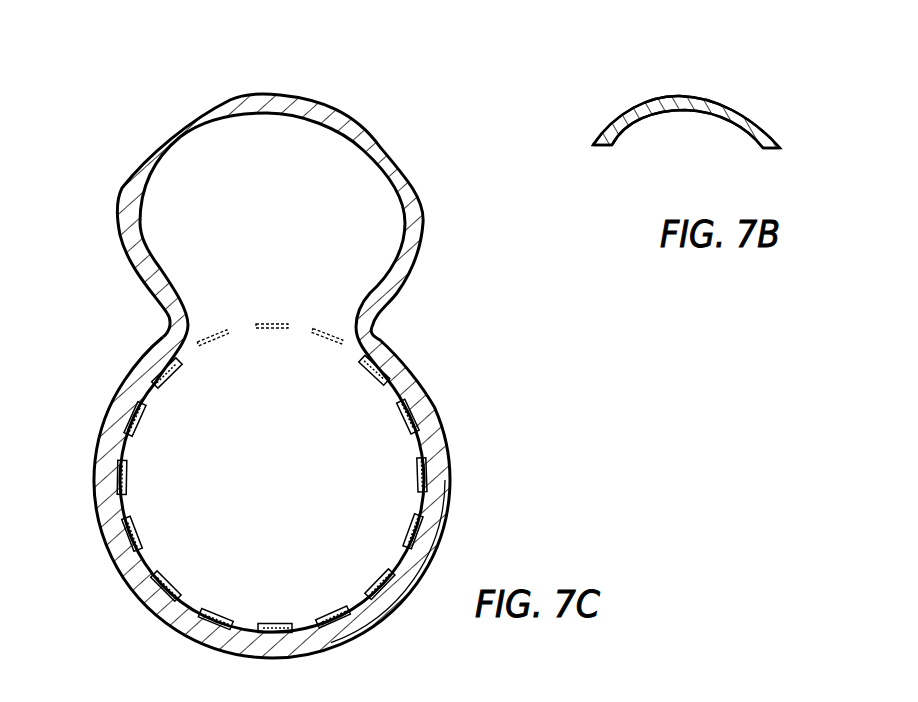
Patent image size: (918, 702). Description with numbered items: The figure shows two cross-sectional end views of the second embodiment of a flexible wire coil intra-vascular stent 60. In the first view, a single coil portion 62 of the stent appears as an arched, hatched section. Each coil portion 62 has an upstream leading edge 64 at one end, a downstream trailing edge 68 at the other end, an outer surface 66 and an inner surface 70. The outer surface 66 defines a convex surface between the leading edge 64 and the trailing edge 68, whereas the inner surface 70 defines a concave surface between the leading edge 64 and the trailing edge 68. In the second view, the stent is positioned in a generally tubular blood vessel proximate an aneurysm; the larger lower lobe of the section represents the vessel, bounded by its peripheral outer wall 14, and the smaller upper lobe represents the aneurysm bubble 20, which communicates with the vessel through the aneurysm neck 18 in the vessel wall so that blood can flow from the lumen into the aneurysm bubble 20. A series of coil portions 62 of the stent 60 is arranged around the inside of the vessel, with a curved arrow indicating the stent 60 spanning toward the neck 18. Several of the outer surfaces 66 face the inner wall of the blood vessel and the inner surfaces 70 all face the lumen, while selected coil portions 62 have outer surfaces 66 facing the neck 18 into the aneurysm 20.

In FIG. 7C, the peripheral outer wall 14 is at (448, 428).
In FIG. 7C, the aneurysm neck 18 is at (320, 318).
In FIG. 7C, the aneurysm bubble 20 is at (320, 145).
In FIG. 7C, the flexible wire coil intra-vascular stent 60 is at (213, 333).
In FIG. 7C, the coil portion 62 is at (163, 363).
In FIG. 7B, the coil portion 62 is at (647, 100).
In FIG. 7B, the upstream leading edge 64 is at (594, 146).
In FIG. 7B, the outer surface 66 is at (700, 97).
In FIG. 7B, the downstream trailing edge 68 is at (778, 147).
In FIG. 7B, the inner surface 70 is at (630, 128).